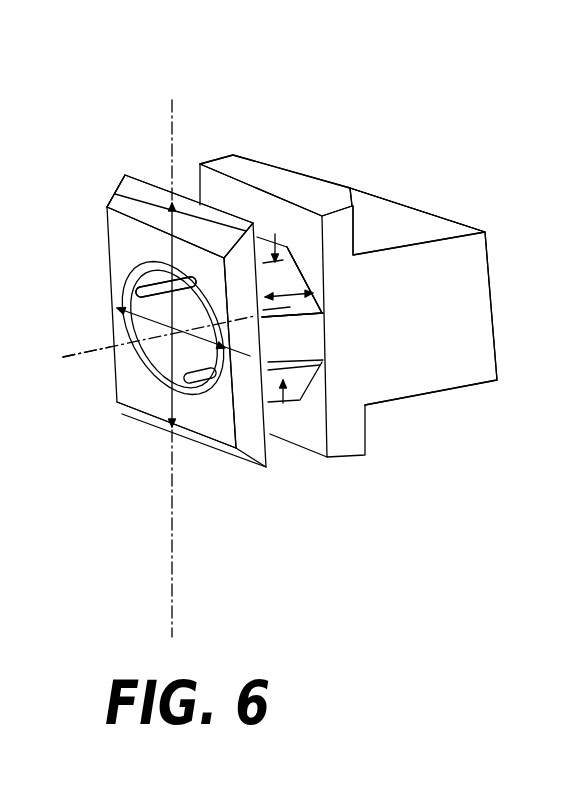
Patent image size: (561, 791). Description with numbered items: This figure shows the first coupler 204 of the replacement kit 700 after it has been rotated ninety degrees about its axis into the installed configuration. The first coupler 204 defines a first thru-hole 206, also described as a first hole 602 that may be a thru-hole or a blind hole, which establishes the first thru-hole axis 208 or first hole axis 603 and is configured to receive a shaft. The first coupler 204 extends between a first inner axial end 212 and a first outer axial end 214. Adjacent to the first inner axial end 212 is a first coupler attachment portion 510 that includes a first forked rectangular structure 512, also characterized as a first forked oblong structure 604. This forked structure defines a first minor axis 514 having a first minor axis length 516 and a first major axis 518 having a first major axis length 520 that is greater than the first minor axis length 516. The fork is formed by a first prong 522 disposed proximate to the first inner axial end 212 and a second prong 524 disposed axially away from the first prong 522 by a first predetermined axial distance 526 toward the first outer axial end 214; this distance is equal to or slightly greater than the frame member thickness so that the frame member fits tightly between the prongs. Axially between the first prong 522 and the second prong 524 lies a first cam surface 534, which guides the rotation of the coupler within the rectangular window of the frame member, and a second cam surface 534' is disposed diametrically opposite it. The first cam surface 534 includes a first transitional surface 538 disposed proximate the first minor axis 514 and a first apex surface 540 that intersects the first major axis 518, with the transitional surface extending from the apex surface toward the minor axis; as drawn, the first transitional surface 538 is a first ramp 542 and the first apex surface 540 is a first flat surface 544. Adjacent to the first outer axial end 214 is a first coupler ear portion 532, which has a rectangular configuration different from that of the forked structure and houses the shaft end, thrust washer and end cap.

The first coupler 204 is at (263, 234).
The first thru-hole 206 is at (163, 358).
The first thru-hole axis 208 is at (89, 352).
The first inner axial end 212 is at (120, 408).
The first outer axial end 214 is at (447, 216).
The first coupler attachment portion 510 is at (138, 170).
The first forked rectangular structure 512 is at (205, 160).
The first minor axis 514 is at (266, 467).
The first minor axis length 516 is at (196, 425).
The first major axis 518 is at (172, 613).
The first major axis length 520 is at (202, 392).
The first prong 522 is at (117, 237).
The second prong 524 is at (360, 437).
The first predetermined axial distance 526 is at (290, 316).
The first coupler ear portion 532 is at (388, 195).
The first cam surface 534 is at (308, 228).
The second cam surface 534' is at (313, 445).
The first transitional surface 538 is at (292, 320).
The first apex surface 540 is at (270, 230).
The first ramp 542 is at (292, 315).
The first flat surface 544 is at (304, 280).
The first hole 602 is at (166, 287).
The first hole axis 603 is at (107, 348).
The first forked oblong structure 604 is at (109, 190).
The replacement kit 700 is at (470, 142).